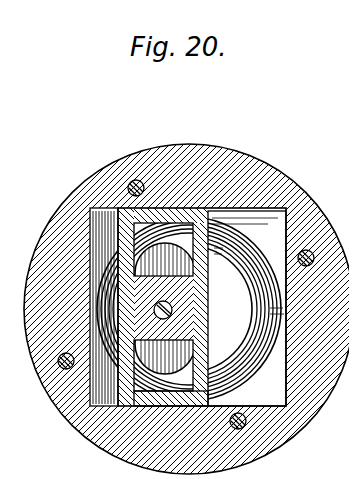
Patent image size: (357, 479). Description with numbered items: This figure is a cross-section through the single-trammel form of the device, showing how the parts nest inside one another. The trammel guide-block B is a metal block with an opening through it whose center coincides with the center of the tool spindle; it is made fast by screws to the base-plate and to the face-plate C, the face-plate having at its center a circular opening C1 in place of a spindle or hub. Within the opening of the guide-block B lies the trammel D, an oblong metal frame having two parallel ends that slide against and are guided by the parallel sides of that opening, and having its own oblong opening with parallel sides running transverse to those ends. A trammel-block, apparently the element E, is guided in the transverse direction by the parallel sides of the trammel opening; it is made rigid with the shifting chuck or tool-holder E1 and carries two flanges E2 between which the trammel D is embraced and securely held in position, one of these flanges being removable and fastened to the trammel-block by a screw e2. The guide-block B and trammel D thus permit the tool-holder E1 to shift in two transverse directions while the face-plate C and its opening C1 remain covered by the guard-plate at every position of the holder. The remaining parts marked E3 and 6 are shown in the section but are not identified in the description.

The trammel guide-block B is at (186, 309).
The face-plate C is at (189, 309).
The circular opening C1 is at (220, 322).
The trammel D is at (50, 400).
The stud E is at (164, 308).
The screw e2 is at (171, 318).
The shifting chuck or tool holder E1 is at (240, 371).
The flanges E2 is at (98, 413).
The right chamber E3 is at (248, 266).
The ring groove 6 is at (233, 367).